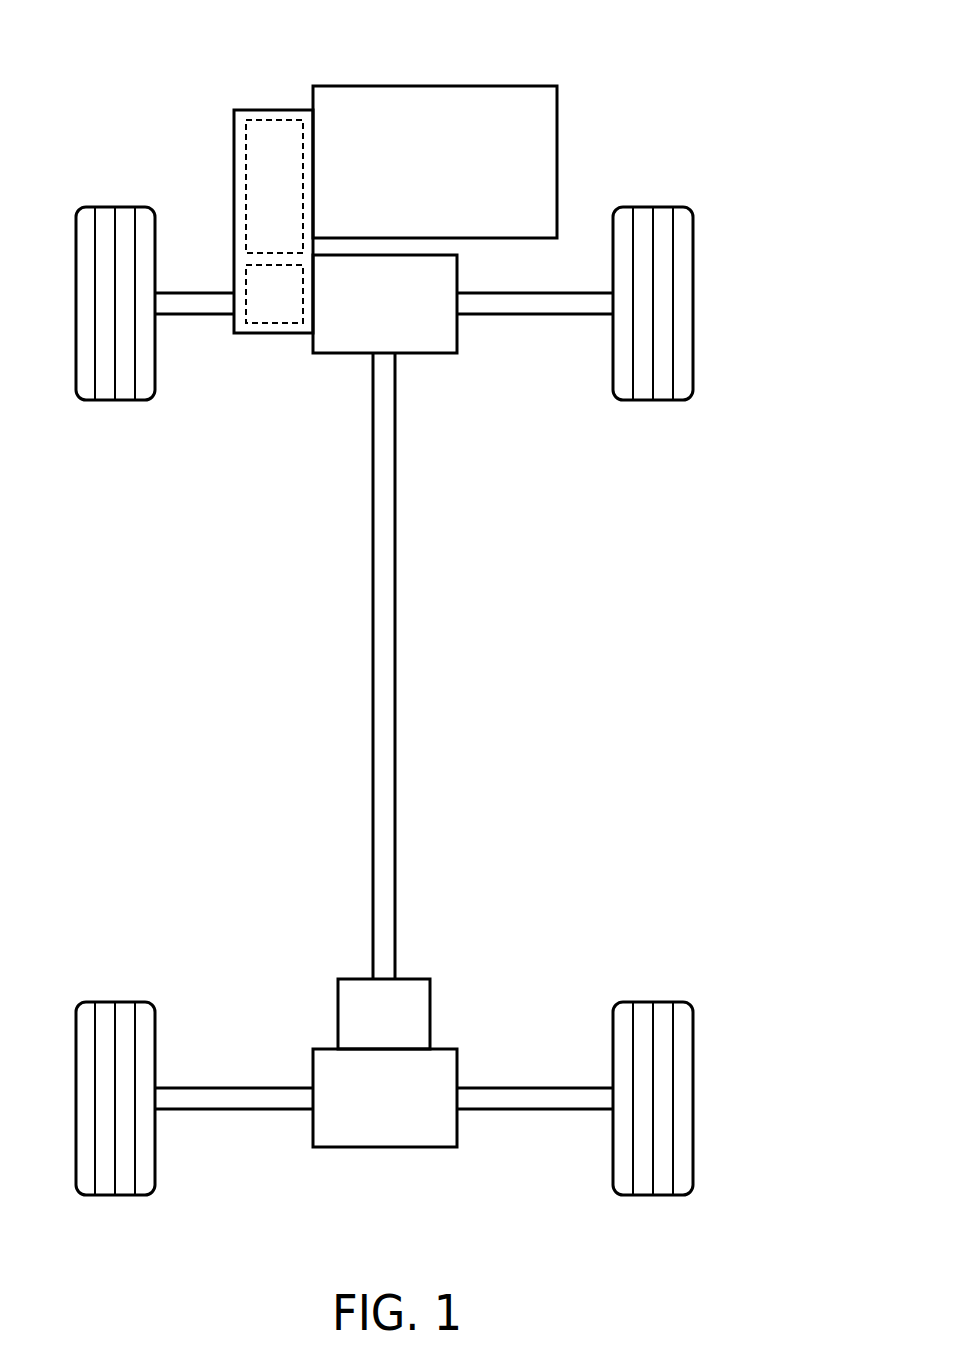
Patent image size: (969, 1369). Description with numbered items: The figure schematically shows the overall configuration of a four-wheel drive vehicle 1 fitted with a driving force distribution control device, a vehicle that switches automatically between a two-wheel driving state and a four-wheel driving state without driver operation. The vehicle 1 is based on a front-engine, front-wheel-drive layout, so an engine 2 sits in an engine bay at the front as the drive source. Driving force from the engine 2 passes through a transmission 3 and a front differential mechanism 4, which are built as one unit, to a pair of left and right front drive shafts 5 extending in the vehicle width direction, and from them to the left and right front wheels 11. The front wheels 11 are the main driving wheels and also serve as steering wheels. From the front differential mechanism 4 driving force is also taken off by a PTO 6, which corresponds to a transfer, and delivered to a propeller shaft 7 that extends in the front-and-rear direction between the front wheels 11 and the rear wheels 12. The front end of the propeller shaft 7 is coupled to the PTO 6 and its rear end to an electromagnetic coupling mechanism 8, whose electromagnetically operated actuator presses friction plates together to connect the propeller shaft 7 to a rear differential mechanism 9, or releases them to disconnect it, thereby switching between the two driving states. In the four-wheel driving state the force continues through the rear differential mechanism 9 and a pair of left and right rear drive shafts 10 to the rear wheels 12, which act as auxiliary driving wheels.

The four-wheel drive vehicle 1 is at (596, 33).
The engine 2 is at (545, 130).
The transmission 3 is at (274, 136).
The front differential mechanism 4 is at (275, 314).
The front drive shaft 5 is at (195, 302).
The PTO 6 is at (432, 340).
The propeller shaft 7 is at (384, 680).
The electromagnetic coupling mechanism 8 is at (412, 988).
The rear differential mechanism 9 is at (387, 1134).
The rear drive shaft 10 is at (232, 1098).
The front wheel 11 is at (125, 400).
The rear wheel 12 is at (127, 1002).